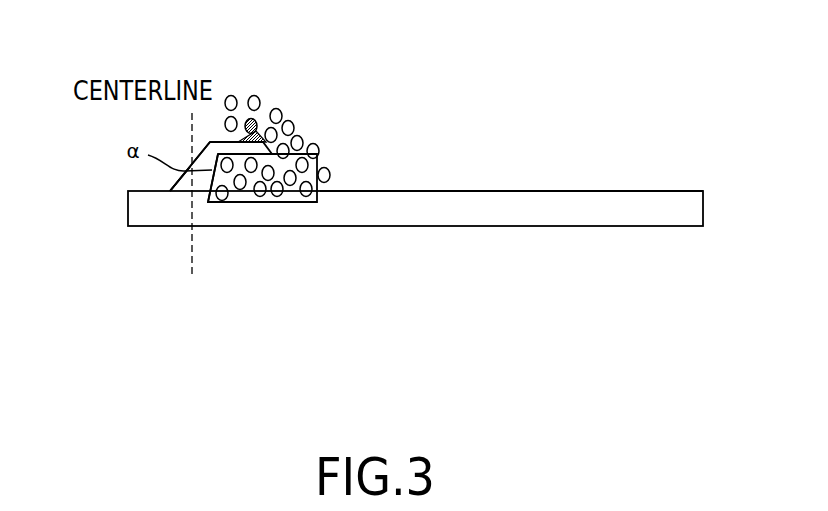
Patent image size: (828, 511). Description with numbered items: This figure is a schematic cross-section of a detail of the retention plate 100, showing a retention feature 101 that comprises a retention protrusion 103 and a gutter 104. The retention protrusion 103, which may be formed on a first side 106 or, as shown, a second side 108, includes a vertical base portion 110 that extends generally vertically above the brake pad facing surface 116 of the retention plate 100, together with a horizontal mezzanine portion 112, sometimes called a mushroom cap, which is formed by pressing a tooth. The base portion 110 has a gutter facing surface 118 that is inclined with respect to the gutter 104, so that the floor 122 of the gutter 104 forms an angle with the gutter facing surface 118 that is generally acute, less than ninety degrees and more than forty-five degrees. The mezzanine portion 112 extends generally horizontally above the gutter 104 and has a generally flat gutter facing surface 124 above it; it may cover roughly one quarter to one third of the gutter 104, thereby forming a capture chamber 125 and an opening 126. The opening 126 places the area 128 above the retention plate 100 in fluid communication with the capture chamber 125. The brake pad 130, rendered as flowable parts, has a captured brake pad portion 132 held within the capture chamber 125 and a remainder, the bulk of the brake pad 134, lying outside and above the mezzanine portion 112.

The retention plate 100 is at (672, 210).
The retention feature 101 is at (111, 139).
The retention protrusion 103 is at (218, 193).
The gutter 104 is at (290, 207).
The first side 106 is at (320, 191).
The second side 108 is at (210, 210).
The vertical base portion 110 is at (199, 181).
The horizontal mezzanine portion 112 is at (251, 126).
The brake pad facing surface 116 is at (600, 191).
The gutter facing surface 118 is at (218, 160).
The floor 122 is at (308, 202).
The gutter facing surface 124 is at (289, 147).
The capture chamber 125 is at (212, 142).
The opening 126 is at (331, 168).
The area 128 is at (431, 168).
The brake pad 130 is at (254, 100).
The captured brake pad portion 132 is at (253, 173).
The bulk of the brake pad 134 is at (258, 132).